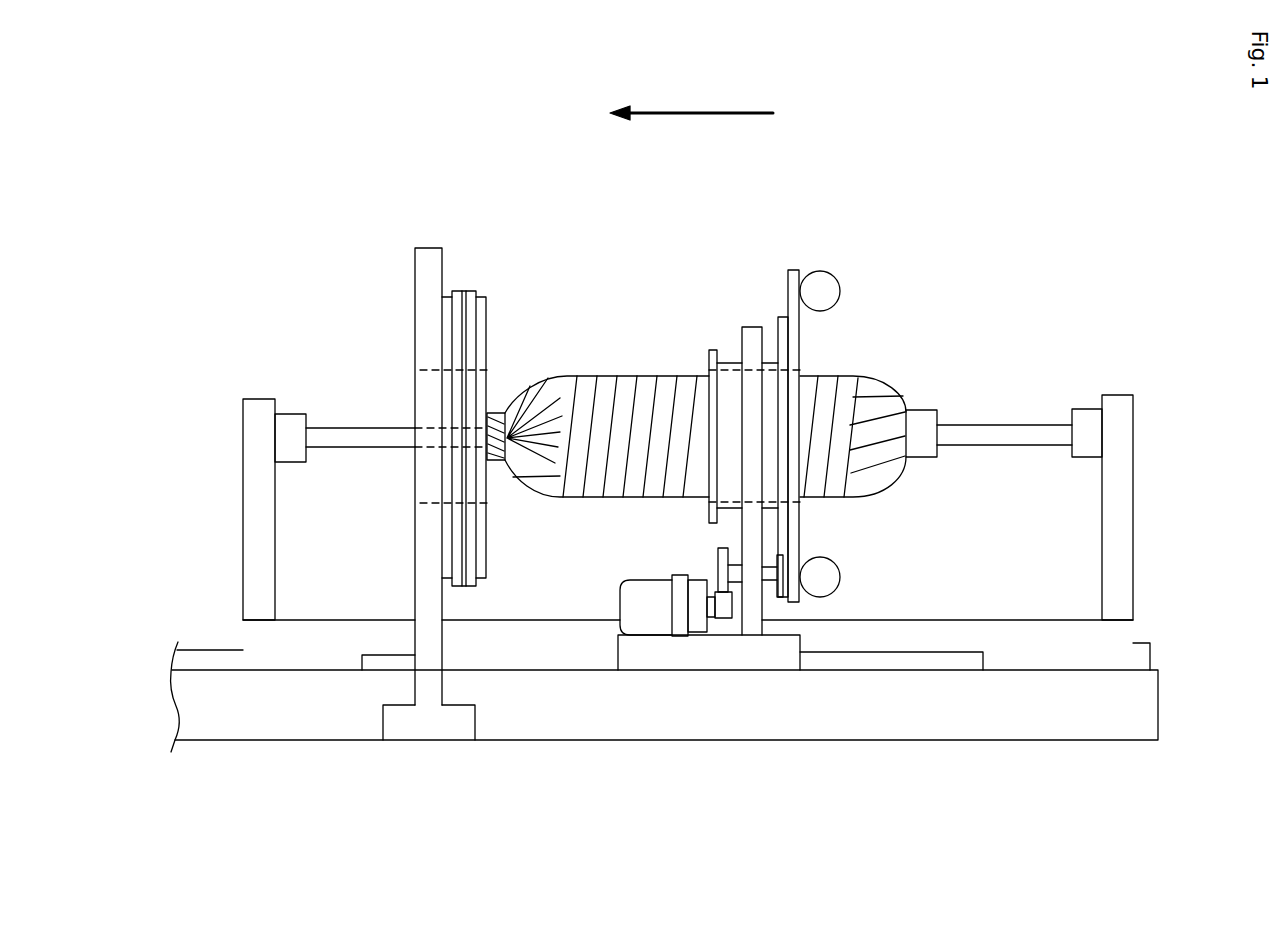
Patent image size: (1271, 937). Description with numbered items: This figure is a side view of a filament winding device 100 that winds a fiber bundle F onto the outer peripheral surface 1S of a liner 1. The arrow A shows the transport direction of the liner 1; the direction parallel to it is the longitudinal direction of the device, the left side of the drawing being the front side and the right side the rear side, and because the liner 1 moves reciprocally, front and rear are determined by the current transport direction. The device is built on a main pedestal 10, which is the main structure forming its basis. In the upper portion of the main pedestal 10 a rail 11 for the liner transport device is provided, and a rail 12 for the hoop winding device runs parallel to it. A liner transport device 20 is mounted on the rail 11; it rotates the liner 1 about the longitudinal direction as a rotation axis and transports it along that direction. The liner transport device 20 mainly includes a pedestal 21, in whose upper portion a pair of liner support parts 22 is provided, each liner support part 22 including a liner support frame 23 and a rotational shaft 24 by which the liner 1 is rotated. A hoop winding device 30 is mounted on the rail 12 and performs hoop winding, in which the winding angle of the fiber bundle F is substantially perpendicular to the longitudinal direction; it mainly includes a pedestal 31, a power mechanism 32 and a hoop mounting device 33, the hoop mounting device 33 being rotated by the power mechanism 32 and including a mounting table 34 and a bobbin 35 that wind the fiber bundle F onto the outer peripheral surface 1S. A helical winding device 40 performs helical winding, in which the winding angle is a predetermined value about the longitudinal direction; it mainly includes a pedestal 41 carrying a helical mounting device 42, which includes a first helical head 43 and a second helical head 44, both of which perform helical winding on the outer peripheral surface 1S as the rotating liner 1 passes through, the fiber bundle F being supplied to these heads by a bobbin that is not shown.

The filament winding device 100 is at (687, 445).
The arrow A is at (691, 98).
The liner 1 is at (655, 335).
The outer peripheral surface 1S is at (625, 387).
The fiber bundle F is at (573, 392).
The main pedestal 10 is at (545, 741).
The rail 11 is at (203, 648).
The rail 12 is at (542, 662).
The liner transport device 20 is at (203, 405).
The pedestal 21 is at (335, 620).
The liner support part 22 is at (258, 388).
The liner support frame 23 is at (243, 465).
The rotational shaft 24 is at (358, 428).
The hoop winding device 30 is at (747, 220).
The pedestal 31 is at (745, 327).
The power mechanism 32 is at (632, 562).
The hoop mounting device 33 is at (800, 250).
The mounting table 34 is at (783, 292).
The bobbin 35 is at (840, 291).
The helical winding device 40 is at (437, 213).
The pedestal 41 is at (415, 253).
The helical mounting device 42 is at (478, 247).
The first helical head 43 is at (476, 291).
The second helical head 44 is at (461, 291).